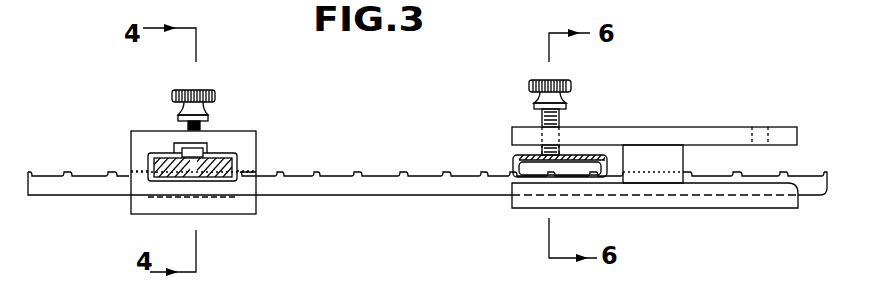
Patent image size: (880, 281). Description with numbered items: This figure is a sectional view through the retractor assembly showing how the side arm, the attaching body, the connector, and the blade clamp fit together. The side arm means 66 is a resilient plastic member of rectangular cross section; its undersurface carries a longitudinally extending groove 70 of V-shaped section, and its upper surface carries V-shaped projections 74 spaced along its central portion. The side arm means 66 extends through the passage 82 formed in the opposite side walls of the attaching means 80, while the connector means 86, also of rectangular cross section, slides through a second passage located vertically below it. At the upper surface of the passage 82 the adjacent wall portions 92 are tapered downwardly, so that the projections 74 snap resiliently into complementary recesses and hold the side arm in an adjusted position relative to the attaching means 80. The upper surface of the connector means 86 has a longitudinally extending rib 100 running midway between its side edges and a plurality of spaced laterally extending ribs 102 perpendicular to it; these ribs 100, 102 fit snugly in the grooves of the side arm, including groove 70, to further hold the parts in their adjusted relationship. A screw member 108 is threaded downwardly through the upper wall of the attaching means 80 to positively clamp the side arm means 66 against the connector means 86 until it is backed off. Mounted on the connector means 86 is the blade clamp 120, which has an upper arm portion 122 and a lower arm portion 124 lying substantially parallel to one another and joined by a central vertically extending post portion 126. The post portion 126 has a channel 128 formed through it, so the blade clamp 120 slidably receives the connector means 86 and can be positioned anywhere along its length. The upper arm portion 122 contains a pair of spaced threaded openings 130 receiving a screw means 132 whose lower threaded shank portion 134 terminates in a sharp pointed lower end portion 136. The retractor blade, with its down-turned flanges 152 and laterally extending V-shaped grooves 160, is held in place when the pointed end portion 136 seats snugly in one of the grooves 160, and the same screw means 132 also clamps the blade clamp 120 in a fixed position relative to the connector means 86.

The side arm means 66 is at (242, 160).
The longitudinally extending groove 70 is at (193, 181).
The projections 74 is at (215, 148).
The attaching means 80 is at (258, 128).
The passage 82 is at (163, 153).
The connector means 86 is at (393, 186).
The wall portions 92 is at (210, 142).
The longitudinally extending rib 100 is at (384, 170).
The laterally extending ribs 102 is at (352, 170).
The screw member 108 is at (203, 85).
The blade clamp 120 is at (713, 122).
The upper arm portion 122 is at (608, 127).
The lower arm portion 124 is at (727, 209).
The central post portion 126 is at (668, 145).
The channel 128 is at (667, 150).
The threaded openings 130 is at (560, 127).
The screw means 132 is at (569, 74).
The lower threaded shank portion 134 is at (538, 118).
The sharp pointed lower end portion 136 is at (552, 173).
The down-turned flanges 152 is at (513, 160).
The grooves 160 is at (540, 176).